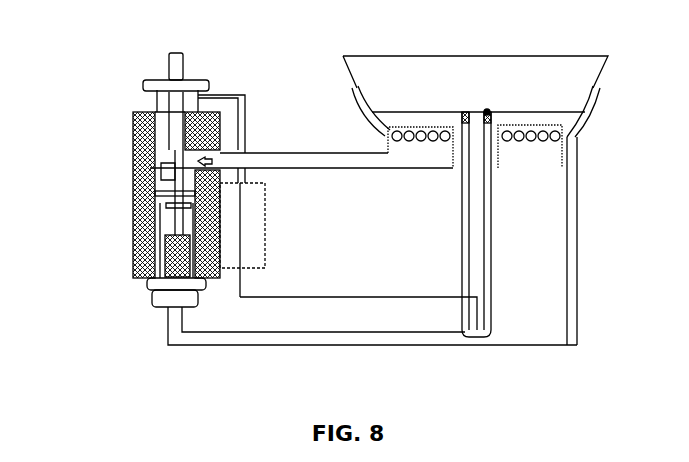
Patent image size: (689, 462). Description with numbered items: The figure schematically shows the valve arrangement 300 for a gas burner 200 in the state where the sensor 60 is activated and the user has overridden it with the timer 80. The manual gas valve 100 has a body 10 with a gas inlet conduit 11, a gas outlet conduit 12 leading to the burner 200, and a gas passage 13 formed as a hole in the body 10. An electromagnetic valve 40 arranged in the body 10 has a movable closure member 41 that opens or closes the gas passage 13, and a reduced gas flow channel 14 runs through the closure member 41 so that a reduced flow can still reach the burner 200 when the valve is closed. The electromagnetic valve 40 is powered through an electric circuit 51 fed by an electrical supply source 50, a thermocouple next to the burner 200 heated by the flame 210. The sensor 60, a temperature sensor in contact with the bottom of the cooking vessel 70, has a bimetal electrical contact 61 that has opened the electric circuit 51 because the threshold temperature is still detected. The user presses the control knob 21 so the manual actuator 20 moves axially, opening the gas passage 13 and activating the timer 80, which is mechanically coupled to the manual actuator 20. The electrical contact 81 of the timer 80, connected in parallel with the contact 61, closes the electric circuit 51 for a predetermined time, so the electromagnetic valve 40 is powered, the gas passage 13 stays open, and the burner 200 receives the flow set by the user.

The manual gas valve 100 is at (93, 77).
The body 10 is at (133, 134).
The gas inlet conduit 11 is at (158, 207).
The gas outlet conduit 12 is at (212, 160).
The gas passage 13 is at (222, 168).
The reduced gas flow channel 14 is at (153, 194).
The manual actuator 20 is at (208, 90).
The control knob 21 is at (172, 58).
The electromagnetic valve 40 is at (166, 240).
The movable closure member 41 is at (230, 249).
The electrical supply source 50 is at (580, 147).
The electric circuit 51 is at (415, 330).
The sensor 60 is at (487, 112).
The electrical contact 61 is at (462, 112).
The cooking vessel 70 is at (577, 82).
The timer 80 is at (190, 281).
The electrical contact 81 is at (478, 328).
The gas burner 200 is at (528, 155).
The flame 210 is at (570, 128).
The valve arrangement 300 is at (302, 78).